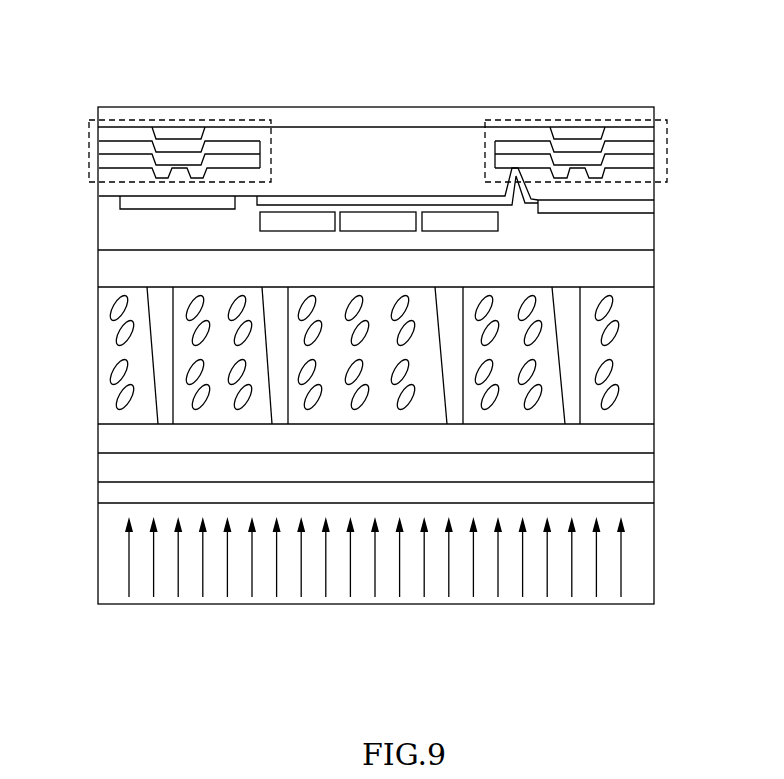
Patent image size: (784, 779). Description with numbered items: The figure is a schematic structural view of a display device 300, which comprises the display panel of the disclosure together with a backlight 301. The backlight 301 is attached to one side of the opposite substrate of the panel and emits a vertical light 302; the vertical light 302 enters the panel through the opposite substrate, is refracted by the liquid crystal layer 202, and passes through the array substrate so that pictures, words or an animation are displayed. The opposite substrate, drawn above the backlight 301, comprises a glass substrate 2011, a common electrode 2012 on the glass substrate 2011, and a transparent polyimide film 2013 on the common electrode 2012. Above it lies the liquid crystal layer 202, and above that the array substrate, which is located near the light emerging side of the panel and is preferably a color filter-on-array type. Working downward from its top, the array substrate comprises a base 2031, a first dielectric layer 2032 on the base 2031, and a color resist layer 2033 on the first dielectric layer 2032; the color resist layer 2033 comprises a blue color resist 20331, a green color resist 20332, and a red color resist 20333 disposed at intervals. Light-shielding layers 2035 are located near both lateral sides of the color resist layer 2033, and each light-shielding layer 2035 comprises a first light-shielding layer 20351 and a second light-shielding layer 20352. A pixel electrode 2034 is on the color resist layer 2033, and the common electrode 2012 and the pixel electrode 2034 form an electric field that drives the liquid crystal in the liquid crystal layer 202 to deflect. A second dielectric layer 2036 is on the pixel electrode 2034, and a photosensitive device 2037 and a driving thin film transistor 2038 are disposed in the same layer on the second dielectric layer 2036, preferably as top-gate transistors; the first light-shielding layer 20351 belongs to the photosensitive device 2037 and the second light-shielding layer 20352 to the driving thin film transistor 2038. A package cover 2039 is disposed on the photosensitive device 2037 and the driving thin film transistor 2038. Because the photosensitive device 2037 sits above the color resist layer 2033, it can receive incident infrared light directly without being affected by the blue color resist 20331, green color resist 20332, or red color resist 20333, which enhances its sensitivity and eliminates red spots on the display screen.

The display device 300 is at (134, 84).
The backlight 301 is at (635, 567).
The vertical light 302 is at (123, 557).
The liquid crystal layer 202 is at (635, 353).
The glass substrate 2011 is at (635, 490).
The common electrode 2012 is at (635, 463).
The transparent polyimide film 2013 is at (635, 435).
The base 2031 is at (635, 265).
The first dielectric layer 2032 is at (635, 232).
The color resist layer 2033 is at (379, 430).
The blue color resist 20331 is at (305, 222).
The green color resist 20332 is at (387, 222).
The red color resist 20333 is at (452, 222).
The pixel electrode 2034 is at (345, 197).
The light-shielding layer 2035 is at (387, 422).
The first light-shielding layer 20351 is at (150, 203).
The second light-shielding layer 20352 is at (635, 202).
The second dielectric layer 2036 is at (460, 142).
The photosensitive device 2037 is at (202, 121).
The driving thin film transistor 2038 is at (583, 120).
The package cover 2039 is at (633, 118).